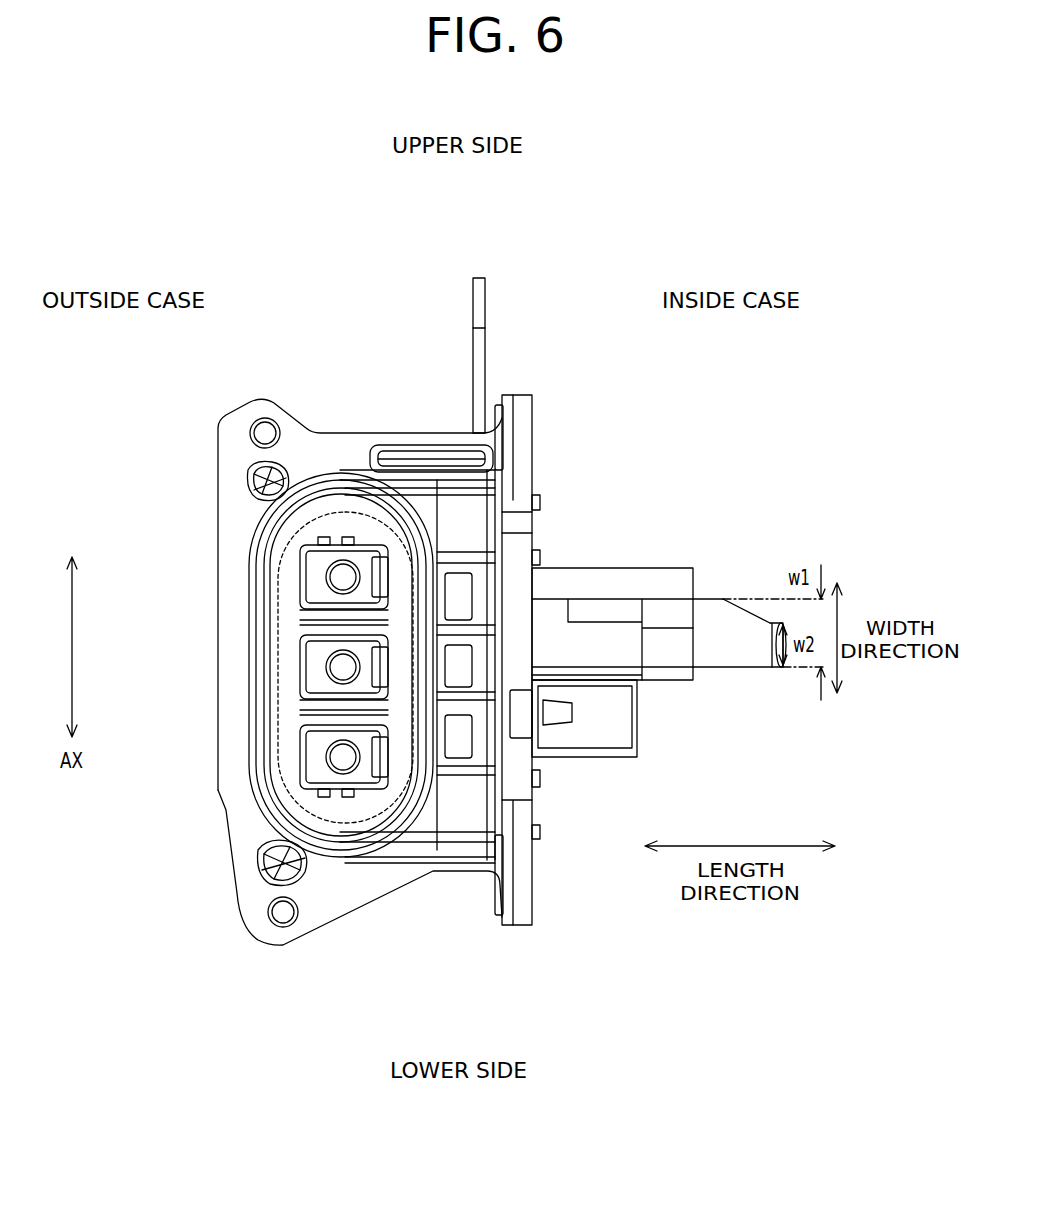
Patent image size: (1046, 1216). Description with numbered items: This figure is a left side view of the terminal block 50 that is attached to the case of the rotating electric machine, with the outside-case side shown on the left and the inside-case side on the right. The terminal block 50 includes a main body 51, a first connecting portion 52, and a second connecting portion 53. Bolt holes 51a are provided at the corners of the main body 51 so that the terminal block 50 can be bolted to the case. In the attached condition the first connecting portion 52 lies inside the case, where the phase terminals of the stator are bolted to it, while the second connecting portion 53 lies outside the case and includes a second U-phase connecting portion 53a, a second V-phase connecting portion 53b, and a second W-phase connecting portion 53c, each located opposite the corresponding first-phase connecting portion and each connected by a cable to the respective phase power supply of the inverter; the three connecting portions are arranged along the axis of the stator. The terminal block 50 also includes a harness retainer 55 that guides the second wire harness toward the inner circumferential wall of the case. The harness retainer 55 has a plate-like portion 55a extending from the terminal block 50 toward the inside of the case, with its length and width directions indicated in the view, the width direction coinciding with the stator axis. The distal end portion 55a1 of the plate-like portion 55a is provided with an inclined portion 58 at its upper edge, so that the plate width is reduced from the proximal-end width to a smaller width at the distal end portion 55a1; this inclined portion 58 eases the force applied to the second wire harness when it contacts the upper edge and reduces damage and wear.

The terminal block 50 is at (163, 1037).
The main body 51 is at (513, 395).
The bolt holes 51a is at (500, 423).
The first connecting portion 52 is at (634, 560).
The second connecting portion 53 is at (160, 495).
The second U-phase connecting portion 53a is at (327, 578).
The second V-phase connecting portion 53b is at (327, 667).
The second W-phase connecting portion 53c is at (327, 757).
The harness retainer 55 is at (709, 694).
The plate-like portion 55a is at (753, 668).
The distal end portion 55a1 is at (775, 668).
The inclined portion 58 is at (747, 605).